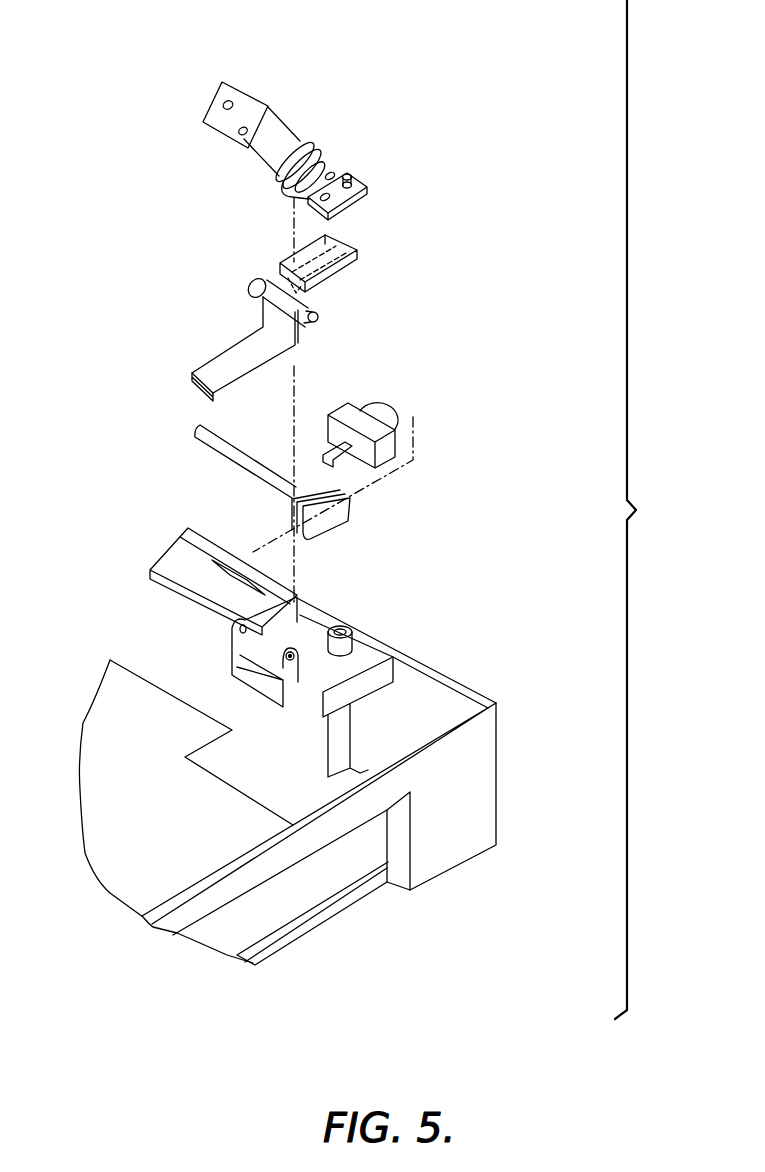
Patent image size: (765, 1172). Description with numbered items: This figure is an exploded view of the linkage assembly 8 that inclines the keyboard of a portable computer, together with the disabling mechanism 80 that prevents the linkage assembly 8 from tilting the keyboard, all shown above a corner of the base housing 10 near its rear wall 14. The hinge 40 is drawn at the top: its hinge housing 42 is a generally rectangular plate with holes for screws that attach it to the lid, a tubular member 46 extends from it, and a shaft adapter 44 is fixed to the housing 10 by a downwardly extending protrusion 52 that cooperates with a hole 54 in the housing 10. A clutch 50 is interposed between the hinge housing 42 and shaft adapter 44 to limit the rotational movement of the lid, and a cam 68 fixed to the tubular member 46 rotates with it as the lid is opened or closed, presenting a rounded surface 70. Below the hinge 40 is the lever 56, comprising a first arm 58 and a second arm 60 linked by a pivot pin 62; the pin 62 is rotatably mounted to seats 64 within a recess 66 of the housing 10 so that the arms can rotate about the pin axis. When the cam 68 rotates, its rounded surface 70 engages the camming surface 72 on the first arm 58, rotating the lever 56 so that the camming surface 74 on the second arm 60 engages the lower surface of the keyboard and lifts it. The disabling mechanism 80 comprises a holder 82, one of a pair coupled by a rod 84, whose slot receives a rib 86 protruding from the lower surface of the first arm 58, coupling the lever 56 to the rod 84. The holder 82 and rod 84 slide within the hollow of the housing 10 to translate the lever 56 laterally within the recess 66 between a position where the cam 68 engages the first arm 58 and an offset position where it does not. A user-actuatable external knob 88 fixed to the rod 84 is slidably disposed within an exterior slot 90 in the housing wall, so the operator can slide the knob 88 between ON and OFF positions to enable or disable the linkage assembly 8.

The linkage assembly 8 is at (491, 68).
The base housing 10 is at (496, 803).
The rear wall 14 is at (453, 707).
The hinge 40 is at (318, 116).
The hinge housing 42 is at (247, 100).
The shaft adapter 44 is at (296, 213).
The tubular member 46 is at (262, 145).
The clutch 50 is at (350, 175).
The protrusion 52 is at (347, 208).
The hole 54 is at (348, 630).
The lever 56 is at (241, 312).
The first arm 58 is at (357, 256).
The second arm 60 is at (212, 376).
The pivot pin 62 is at (316, 320).
The seat 64 is at (291, 663).
The recess 66 is at (260, 673).
The cam 68 is at (309, 146).
The rounded surface 70 is at (293, 191).
The camming surface 72 is at (307, 251).
The camming surface 74 is at (218, 358).
The disabling mechanism 80 is at (432, 533).
The holder 82 is at (337, 522).
The rod 84 is at (255, 467).
The rib 86 is at (332, 280).
The knob 88 is at (368, 412).
The exterior slot 90 is at (230, 577).